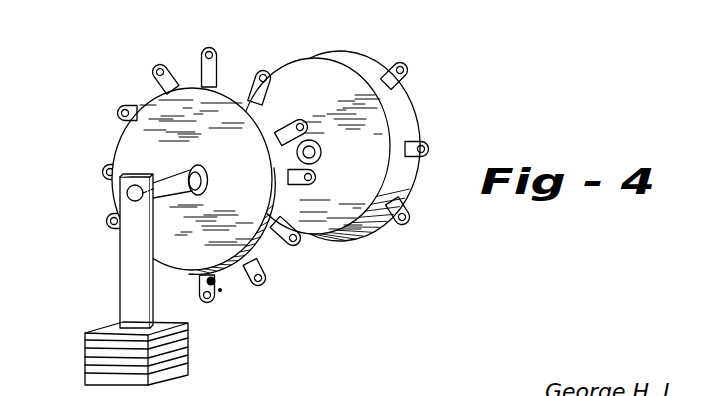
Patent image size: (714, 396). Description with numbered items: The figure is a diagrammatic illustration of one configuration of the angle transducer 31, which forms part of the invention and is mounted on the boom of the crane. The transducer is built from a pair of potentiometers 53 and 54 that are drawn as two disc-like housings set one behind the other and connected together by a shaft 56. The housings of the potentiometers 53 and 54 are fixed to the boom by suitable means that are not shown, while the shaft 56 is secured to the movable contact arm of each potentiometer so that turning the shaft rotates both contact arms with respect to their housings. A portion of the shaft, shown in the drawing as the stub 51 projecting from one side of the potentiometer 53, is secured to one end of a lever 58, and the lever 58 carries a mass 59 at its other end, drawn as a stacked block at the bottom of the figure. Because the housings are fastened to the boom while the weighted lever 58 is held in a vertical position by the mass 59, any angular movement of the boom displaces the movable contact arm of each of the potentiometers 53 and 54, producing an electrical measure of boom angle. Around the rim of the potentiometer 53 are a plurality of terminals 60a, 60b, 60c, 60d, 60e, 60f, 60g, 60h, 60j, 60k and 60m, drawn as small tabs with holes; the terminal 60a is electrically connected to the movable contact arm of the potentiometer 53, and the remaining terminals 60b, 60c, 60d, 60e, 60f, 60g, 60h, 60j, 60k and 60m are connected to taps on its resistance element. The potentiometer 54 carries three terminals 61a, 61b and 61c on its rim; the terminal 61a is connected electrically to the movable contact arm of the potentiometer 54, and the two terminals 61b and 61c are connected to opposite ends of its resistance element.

The angle transducer 31 is at (257, 47).
The shaft 51 is at (172, 178).
The potentiometer 53 is at (112, 152).
The potentiometer 54 is at (360, 50).
The shaft 56 is at (322, 158).
The lever 58 is at (120, 263).
The mass 59 is at (85, 350).
The terminal 60a is at (211, 304).
The terminal 60b is at (262, 289).
The terminal 60c is at (298, 247).
The terminal 60d is at (307, 186).
The terminal 60e is at (299, 118).
The terminal 60f is at (259, 66).
The terminal 60g is at (206, 47).
The terminal 60h is at (152, 68).
The terminal 60j is at (118, 113).
The terminal 60k is at (104, 172).
The terminal 60m is at (108, 224).
The terminal 61a is at (408, 206).
The terminal 61b is at (432, 147).
The terminal 61c is at (413, 68).